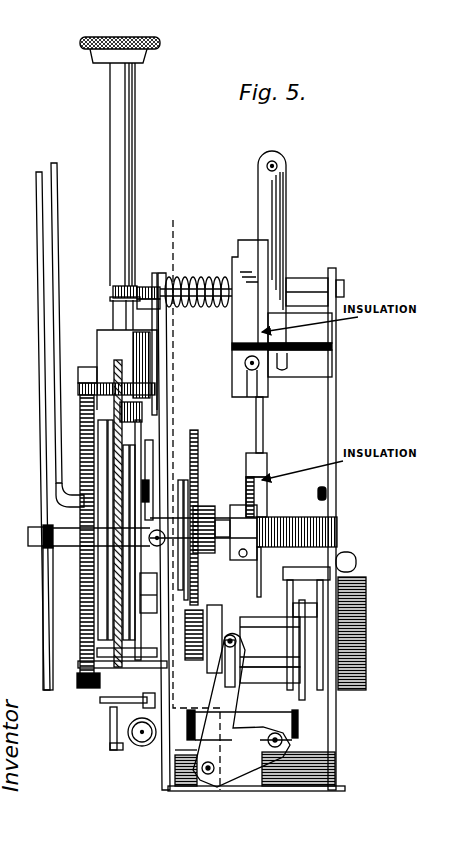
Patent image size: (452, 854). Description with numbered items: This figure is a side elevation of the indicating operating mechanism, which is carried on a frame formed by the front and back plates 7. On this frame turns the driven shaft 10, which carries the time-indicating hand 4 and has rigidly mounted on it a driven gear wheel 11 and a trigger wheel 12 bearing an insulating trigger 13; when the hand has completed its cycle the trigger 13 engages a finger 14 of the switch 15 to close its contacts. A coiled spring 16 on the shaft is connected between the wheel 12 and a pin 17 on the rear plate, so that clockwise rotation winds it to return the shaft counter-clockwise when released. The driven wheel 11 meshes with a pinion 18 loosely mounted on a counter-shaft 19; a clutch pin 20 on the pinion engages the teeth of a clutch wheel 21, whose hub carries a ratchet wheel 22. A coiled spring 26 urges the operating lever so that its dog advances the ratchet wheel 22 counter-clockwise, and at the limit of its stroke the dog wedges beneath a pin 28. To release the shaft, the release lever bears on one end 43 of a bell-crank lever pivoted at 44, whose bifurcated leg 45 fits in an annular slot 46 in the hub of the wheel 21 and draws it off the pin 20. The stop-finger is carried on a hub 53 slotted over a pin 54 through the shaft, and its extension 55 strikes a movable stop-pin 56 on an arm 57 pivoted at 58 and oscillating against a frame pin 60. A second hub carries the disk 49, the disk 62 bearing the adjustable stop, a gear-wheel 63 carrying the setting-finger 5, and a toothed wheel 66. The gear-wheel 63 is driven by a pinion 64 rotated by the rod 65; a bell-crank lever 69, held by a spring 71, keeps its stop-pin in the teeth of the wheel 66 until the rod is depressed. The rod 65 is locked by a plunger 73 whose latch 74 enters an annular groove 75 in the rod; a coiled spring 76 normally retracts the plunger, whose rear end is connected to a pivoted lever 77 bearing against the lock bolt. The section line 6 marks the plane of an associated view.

The time-indicating hand 4 is at (38, 402).
The setting-finger 5 is at (52, 428).
The section line 6 is at (196, 502).
The front and back plates 7 is at (336, 408).
The driven shaft 10 is at (176, 520).
The driven gear wheel 11 is at (190, 463).
The trigger wheel 12 is at (268, 488).
The insulating trigger 13 is at (268, 463).
The finger 14 is at (263, 408).
The switch 15 is at (240, 328).
The coiled spring 16 is at (271, 516).
The pin 17 is at (328, 491).
The pinion 18 is at (201, 658).
The counter-shaft 19 is at (180, 610).
The clutch pin 20 is at (226, 633).
The clutch wheel 21 is at (236, 630).
The ratchet wheel 22 is at (305, 650).
The coiled spring 26 is at (364, 598).
The pin 28 is at (313, 571).
The end of bell-crank lever 43 is at (270, 730).
The pivot 44 is at (196, 768).
The bifurcated leg 45 is at (270, 660).
The annular slot 46 is at (240, 630).
The wheel 49 is at (138, 451).
The hub 53 is at (157, 505).
The pin 54 is at (160, 536).
The extension 55 is at (145, 635).
The movable stop-pin 56 is at (143, 663).
The arm 57 is at (157, 708).
The pivot 58 is at (145, 698).
The pin 60 is at (110, 680).
The disk 62 is at (130, 612).
The gear-wheel 63 is at (84, 442).
The pinion 64 is at (108, 348).
The rod 65 is at (135, 181).
The toothed wheel 66 is at (103, 567).
The bell-crank lever 69 is at (110, 718).
The spring 71 is at (143, 745).
The plunger 73 is at (302, 278).
The latch 74 is at (143, 285).
The annular groove 75 is at (113, 292).
The coiled spring 76 is at (200, 273).
The pivoted lever 77 is at (265, 216).